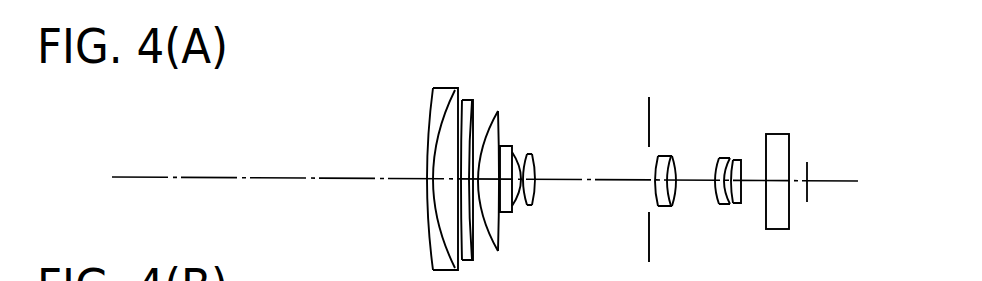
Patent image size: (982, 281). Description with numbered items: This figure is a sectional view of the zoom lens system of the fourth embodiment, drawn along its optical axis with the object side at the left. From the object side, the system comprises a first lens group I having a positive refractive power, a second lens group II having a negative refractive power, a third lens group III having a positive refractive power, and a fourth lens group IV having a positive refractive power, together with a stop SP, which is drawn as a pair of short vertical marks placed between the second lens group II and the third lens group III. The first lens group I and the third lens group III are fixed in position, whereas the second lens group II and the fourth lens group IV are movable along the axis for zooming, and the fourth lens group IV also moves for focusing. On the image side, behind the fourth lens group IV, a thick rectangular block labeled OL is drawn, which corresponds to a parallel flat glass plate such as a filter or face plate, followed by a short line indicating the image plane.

The first lens group I is at (502, 42).
The second lens group II is at (541, 44).
The third lens group III is at (687, 44).
The fourth lens group IV is at (748, 44).
The stop SP is at (648, 231).
The optical low-pass filter / glass block OL is at (789, 133).